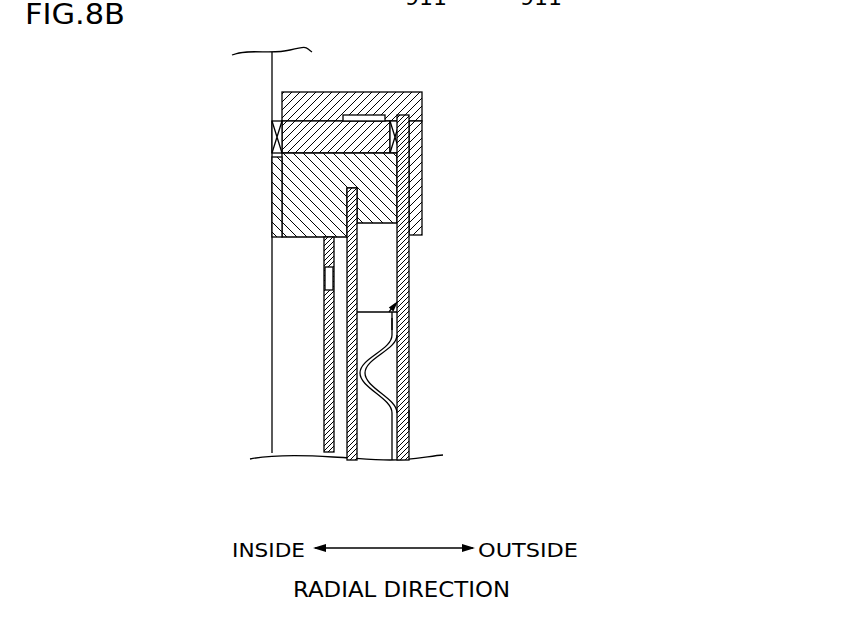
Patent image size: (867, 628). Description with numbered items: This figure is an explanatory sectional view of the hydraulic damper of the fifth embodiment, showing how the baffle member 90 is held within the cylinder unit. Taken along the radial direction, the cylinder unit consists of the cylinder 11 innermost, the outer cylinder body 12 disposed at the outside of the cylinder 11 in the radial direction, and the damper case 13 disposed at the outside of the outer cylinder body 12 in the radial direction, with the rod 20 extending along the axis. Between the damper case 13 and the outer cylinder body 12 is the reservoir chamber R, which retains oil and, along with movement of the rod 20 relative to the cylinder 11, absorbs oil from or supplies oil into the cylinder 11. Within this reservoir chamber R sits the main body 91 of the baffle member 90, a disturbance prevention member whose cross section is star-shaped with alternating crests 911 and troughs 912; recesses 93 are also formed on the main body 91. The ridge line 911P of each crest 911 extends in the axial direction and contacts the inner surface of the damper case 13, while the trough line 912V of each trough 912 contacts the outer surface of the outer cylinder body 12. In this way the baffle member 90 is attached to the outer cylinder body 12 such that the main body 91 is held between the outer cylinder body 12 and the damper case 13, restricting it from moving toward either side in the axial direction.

The rod 20 is at (273, 69).
The outer cylinder body 12 is at (350, 253).
The cylinder 11 is at (332, 306).
The reservoir chamber R is at (380, 250).
The baffle member 90 is at (382, 297).
The main body 91 is at (408, 297).
The ridge line 911P is at (399, 324).
The recesses 93 is at (397, 375).
The damper case 13 is at (408, 420).
The trough line 912V is at (352, 420).
The troughs 912 is at (355, 468).
The crests 911 is at (394, 468).